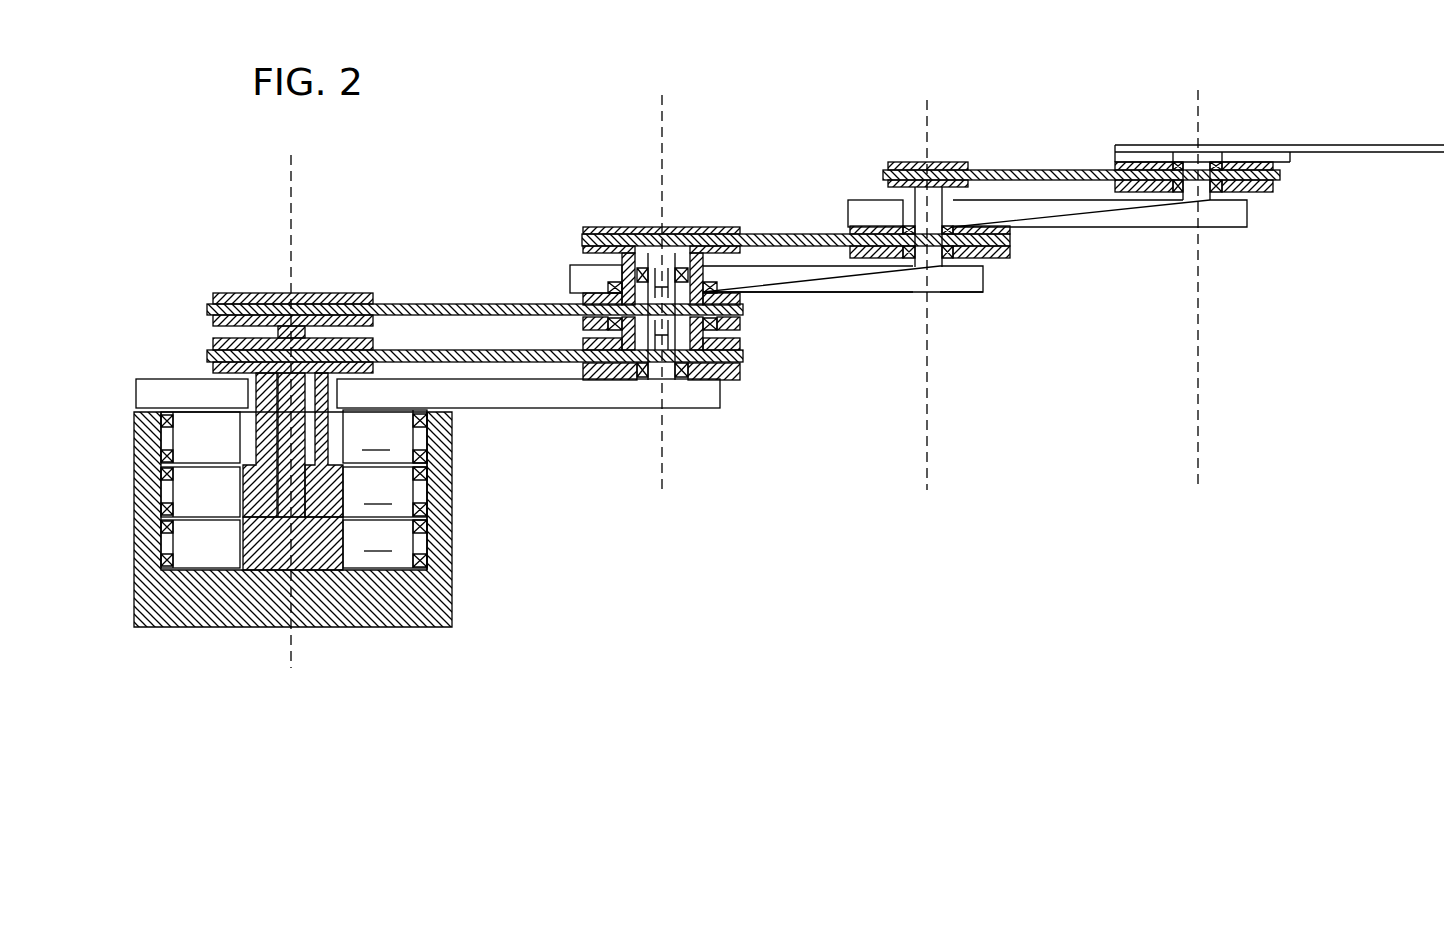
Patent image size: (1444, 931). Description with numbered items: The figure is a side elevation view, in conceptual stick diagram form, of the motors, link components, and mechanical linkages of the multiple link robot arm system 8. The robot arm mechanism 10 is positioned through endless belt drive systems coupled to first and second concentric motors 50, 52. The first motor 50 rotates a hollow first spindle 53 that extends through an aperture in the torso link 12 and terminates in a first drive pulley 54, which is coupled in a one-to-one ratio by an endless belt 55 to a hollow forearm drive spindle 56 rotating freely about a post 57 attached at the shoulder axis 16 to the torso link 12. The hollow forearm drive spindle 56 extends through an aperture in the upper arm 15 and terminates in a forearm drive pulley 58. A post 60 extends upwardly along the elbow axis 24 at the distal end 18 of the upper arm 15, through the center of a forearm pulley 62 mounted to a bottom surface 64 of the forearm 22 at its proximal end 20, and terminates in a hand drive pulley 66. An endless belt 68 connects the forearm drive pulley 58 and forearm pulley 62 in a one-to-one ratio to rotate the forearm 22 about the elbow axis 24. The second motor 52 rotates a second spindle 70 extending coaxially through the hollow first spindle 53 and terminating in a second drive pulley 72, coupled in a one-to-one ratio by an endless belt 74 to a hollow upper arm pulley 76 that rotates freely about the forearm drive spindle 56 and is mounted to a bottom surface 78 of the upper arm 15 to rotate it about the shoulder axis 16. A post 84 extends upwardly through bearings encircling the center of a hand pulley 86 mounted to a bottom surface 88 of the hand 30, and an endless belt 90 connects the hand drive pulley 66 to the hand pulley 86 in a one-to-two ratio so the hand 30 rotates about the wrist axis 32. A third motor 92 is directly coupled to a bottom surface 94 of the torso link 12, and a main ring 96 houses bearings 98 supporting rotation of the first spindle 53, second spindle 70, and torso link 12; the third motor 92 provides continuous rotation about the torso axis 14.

The multiple link robot arm system 8 is at (776, 542).
The robot arm mechanism 10 is at (757, 110).
The torso link 12 is at (578, 408).
The torso axis 14 is at (285, 653).
The upper arm 15 is at (838, 280).
The shoulder axis 16 is at (658, 458).
The distal end 18 is at (955, 292).
The proximal end 20 is at (858, 212).
The forearm 22 is at (1085, 227).
The elbow axis 24 is at (920, 378).
The hand 30 is at (1353, 152).
The wrist axis 32 is at (1190, 372).
The first motor 50 is at (385, 492).
The second motor 52 is at (385, 544).
The hollow first spindle 53 is at (428, 489).
The first drive pulley 54 is at (218, 343).
The endless belt 55 is at (488, 350).
The hollow forearm drive spindle 56 is at (718, 380).
The post 57 is at (668, 268).
The forearm drive pulley 58 is at (607, 227).
The post 60 is at (915, 212).
The forearm pulley 62 is at (1000, 258).
The bottom surface 64 is at (1020, 238).
The hand drive pulley 66 is at (900, 162).
The endless belt 68 is at (765, 235).
The second spindle 70 is at (325, 557).
The second drive pulley 72 is at (232, 293).
The endless belt 74 is at (462, 304).
The hollow upper arm pulley 76 is at (742, 323).
The bottom surface 78 is at (755, 292).
The post 84 is at (1200, 210).
The hand pulley 86 is at (1258, 192).
The bottom surface 88 is at (1290, 158).
The endless belt 90 is at (1048, 170).
The third motor 92 is at (385, 436).
The bottom surface 94 is at (467, 410).
The main ring 96 is at (190, 627).
The bearings 98 is at (175, 454).